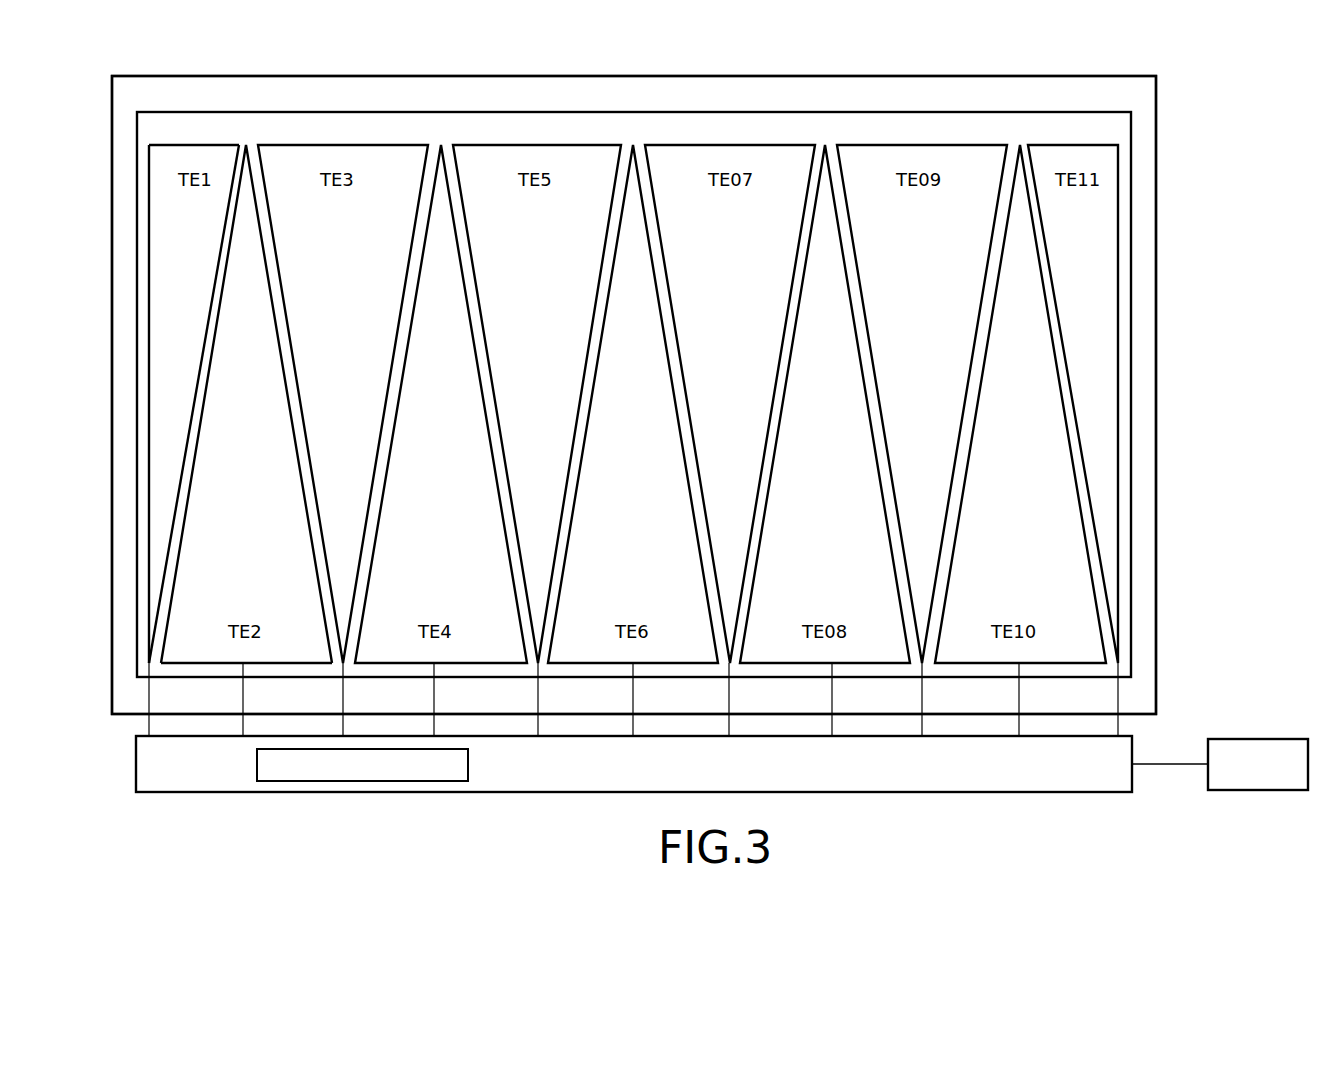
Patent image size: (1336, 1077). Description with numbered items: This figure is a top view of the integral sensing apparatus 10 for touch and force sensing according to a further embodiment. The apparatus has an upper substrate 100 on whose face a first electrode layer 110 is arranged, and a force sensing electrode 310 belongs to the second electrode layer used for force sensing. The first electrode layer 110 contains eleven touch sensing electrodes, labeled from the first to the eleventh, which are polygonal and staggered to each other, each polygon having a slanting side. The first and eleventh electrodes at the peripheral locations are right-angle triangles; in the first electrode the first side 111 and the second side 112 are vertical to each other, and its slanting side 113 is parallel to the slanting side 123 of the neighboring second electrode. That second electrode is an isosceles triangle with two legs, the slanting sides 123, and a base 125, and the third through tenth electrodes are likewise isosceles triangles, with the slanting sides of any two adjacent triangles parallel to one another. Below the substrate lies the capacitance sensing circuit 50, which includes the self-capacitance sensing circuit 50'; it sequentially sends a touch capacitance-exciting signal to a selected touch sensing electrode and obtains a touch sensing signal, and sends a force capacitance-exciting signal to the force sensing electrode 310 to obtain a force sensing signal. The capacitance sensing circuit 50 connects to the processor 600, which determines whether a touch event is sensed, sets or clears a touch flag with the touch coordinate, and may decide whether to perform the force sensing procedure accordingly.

The integral sensing apparatus 10 is at (475, 48).
The upper substrate 100 is at (783, 80).
The force sensing electrode 310 is at (633, 117).
The first electrode layer 110 is at (730, 152).
The first side (first cathetus) 111 is at (148, 405).
The second side (second cathetus) 112 is at (197, 143).
The slanting side 113 is at (208, 317).
The slanting side 123 is at (205, 403).
The base 125 is at (213, 662).
The capacitance sensing circuit 50 is at (634, 780).
The self-capacitance sensing circuit 50' is at (408, 765).
The processor 600 is at (1257, 748).